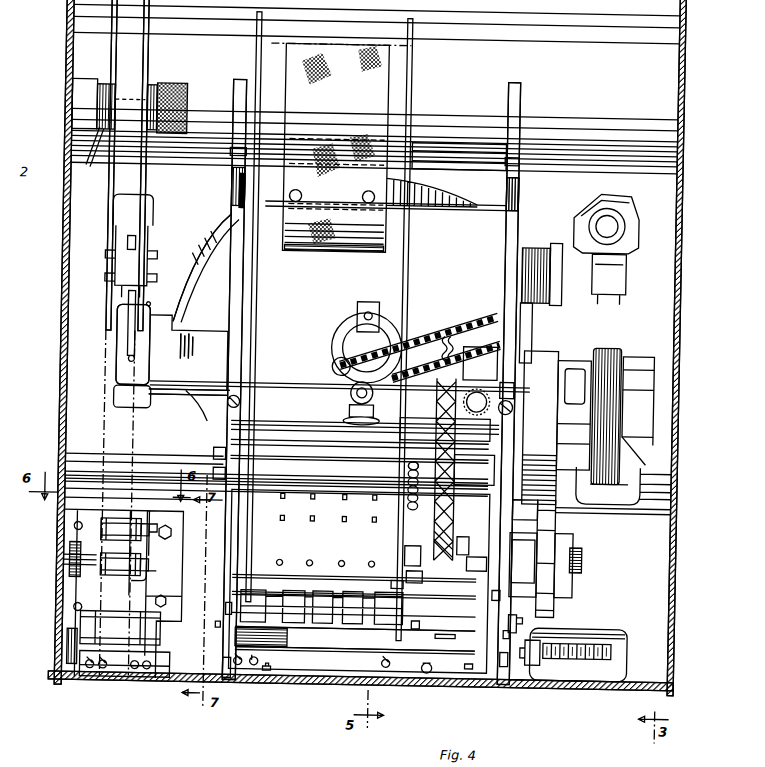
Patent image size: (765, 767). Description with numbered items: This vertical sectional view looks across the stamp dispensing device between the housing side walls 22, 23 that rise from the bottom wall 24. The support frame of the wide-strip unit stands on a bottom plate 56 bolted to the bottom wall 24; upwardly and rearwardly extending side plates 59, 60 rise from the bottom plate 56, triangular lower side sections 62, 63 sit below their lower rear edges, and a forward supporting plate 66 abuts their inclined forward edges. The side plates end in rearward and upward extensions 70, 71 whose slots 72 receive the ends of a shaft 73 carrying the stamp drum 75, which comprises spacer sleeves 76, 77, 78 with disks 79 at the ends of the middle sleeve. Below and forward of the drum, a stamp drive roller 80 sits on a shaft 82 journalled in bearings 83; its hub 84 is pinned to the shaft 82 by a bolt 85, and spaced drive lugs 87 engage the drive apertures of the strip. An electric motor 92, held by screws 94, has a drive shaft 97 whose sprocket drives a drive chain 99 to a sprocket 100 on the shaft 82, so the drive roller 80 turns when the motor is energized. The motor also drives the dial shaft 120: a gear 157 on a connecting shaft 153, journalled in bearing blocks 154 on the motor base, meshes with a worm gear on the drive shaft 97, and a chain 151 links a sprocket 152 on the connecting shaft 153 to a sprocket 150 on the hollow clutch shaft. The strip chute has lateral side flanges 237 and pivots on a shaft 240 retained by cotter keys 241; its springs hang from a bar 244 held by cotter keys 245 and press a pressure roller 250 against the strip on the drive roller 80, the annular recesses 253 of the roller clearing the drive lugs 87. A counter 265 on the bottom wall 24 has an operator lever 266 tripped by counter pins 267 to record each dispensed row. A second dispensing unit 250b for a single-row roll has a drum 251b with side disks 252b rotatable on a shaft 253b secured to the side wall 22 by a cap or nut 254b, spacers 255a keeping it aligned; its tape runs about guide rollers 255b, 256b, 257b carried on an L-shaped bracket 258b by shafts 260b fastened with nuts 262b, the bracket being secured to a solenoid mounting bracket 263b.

The side wall 22 is at (59, 283).
The side wall 23 is at (679, 291).
The bottom wall 24 is at (526, 687).
The bottom plate 56 is at (449, 677).
The side plate 59 is at (254, 297).
The side plate 60 is at (508, 285).
The lower side section 62 is at (232, 660).
The lower side section 63 is at (505, 657).
The forward supporting plate 66 is at (506, 231).
The extension 70 is at (234, 192).
The extension 71 is at (515, 192).
The slots 72 is at (235, 128).
The shaft 73 is at (224, 153).
The stamp reel or drum 75 is at (414, 100).
The spacer sleeve 76 is at (262, 140).
The spacer sleeve 77 is at (268, 148).
The spacer sleeve 78 is at (458, 146).
The disks 79 is at (248, 31).
The stamp drive roller 80 is at (403, 585).
The shaft 82 is at (482, 568).
The bearings 83 is at (253, 524).
The hub 84 is at (413, 548).
The bolt 85 is at (411, 573).
The drive lugs 87 is at (345, 550).
The electric motor 92 is at (656, 383).
The screws 94 is at (556, 508).
The drive shaft 97 is at (423, 411).
The drive chain 99 is at (458, 540).
The sprocket 100 is at (551, 555).
The shaft 120 is at (349, 398).
The sprocket 150 is at (351, 352).
The chain 151 is at (435, 297).
The sprocket 152 is at (458, 310).
The connecting shaft 153 is at (473, 344).
The bearing blocks 154 is at (524, 349).
The gear 157 is at (510, 395).
The lateral side flanges 237 is at (235, 613).
The shaft 240 is at (455, 633).
The cotter keys 241 is at (223, 628).
The bar 244 is at (278, 385).
The cotter keys 245 is at (227, 383).
The pressure roller 250 is at (390, 625).
The dispensing unit 250b is at (87, 328).
The drum 251b is at (100, 44).
The side disks 252b is at (136, 58).
The annular recesses 253 is at (328, 630).
The shaft 253b is at (88, 87).
The cap or nut 254b is at (170, 90).
The spacers 255a is at (92, 156).
The guide roller 255b is at (103, 527).
The guide roller 256b is at (84, 562).
The guide roller 257b is at (105, 630).
The L-shaped bracket 258b is at (172, 512).
The shafts 260b is at (170, 562).
The nuts 262b is at (154, 581).
The solenoid mounting bracket 263b is at (132, 652).
The counter 265 is at (633, 645).
The operator lever 266 is at (545, 622).
The counter pins 267 is at (561, 576).